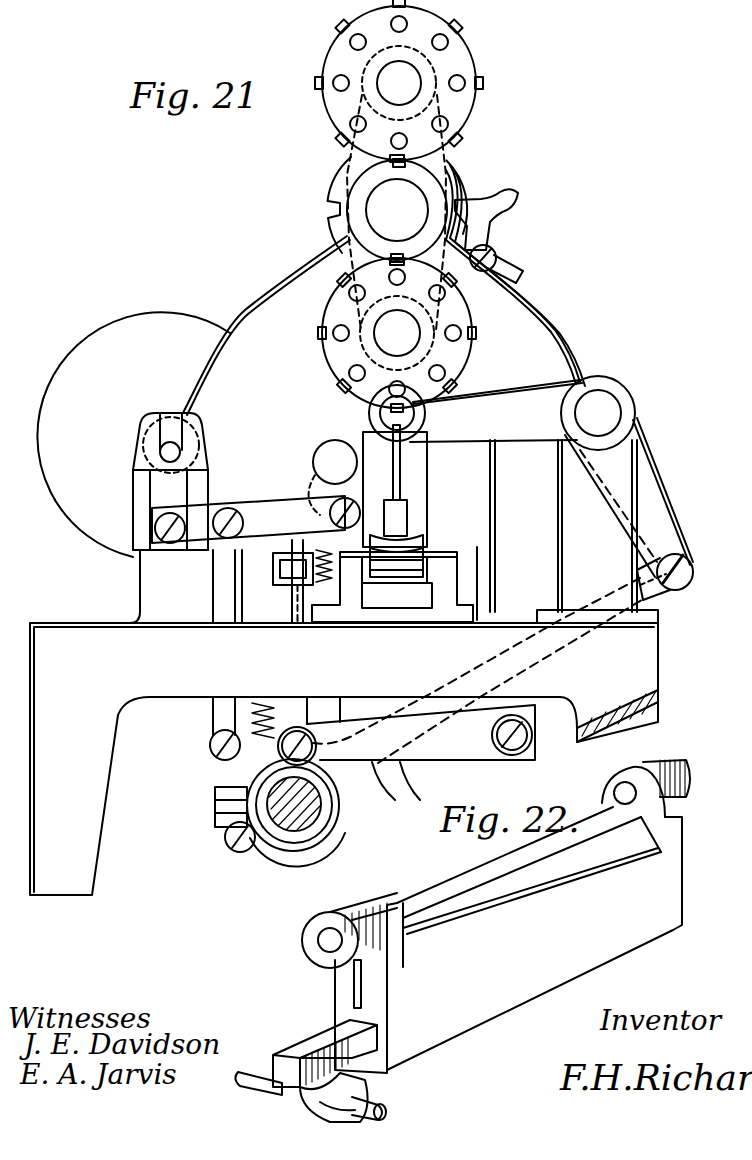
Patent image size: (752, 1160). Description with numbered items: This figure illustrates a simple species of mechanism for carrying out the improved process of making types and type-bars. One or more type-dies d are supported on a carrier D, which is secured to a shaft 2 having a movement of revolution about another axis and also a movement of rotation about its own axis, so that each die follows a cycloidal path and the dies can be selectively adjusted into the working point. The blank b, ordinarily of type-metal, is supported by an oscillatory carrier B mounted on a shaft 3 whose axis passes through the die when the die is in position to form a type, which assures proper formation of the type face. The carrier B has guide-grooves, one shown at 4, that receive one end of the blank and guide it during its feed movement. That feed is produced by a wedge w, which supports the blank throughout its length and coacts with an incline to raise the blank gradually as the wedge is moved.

In FIG. 21, the shaft 2 is at (402, 68).
In FIG. 21, the die carrier D is at (462, 60).
In FIG. 21, the type-die d is at (452, 30).
In FIG. 21, the blank b is at (400, 456).
In FIG. 21, the blank carrier B is at (428, 507).
In FIG. 22, the blank carrier B is at (512, 916).
In FIG. 22, the shaft 3 is at (322, 922).
In FIG. 22, the guide-groove 4 is at (361, 983).
In FIG. 22, the wedge w is at (305, 1050).